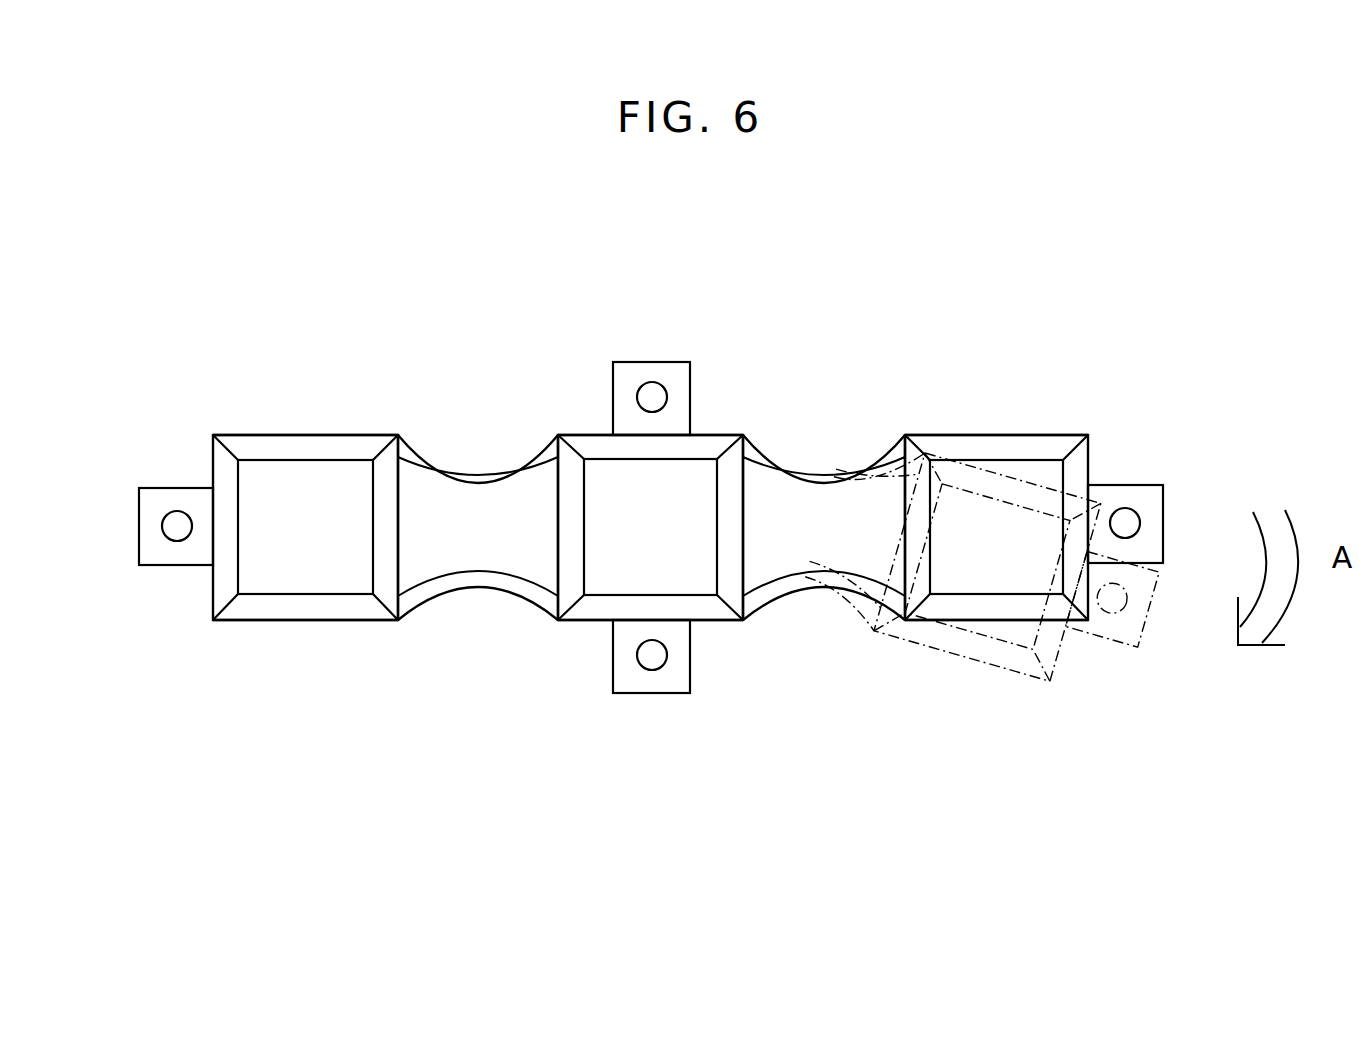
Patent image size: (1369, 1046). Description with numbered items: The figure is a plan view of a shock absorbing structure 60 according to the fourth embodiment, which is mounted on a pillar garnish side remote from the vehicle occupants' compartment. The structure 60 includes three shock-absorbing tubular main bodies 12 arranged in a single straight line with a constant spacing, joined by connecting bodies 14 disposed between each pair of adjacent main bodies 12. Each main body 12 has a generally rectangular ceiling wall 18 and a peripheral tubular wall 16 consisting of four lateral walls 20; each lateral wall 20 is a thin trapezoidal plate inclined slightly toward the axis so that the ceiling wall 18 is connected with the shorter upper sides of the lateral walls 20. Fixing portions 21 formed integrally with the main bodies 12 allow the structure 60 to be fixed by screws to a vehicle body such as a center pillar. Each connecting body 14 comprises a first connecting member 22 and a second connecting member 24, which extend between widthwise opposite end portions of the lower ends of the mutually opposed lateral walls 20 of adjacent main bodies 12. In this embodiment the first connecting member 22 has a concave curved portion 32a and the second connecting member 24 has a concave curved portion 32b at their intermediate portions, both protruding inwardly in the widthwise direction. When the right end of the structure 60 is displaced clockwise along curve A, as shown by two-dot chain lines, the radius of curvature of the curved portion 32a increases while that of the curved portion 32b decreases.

The shock absorbing structure 60 is at (181, 386).
The shock-absorbing tubular main body 12 is at (212, 656).
The connecting body 14 is at (512, 618).
The tubular wall 16 is at (736, 420).
The ceiling wall 18 is at (262, 472).
The lateral wall 20 is at (280, 443).
The fixing portion 21 is at (150, 490).
The first connecting member 22 is at (430, 458).
The second connecting member 24 is at (438, 590).
The concave curved portion 32a is at (487, 460).
The concave curved portion 32b is at (485, 580).